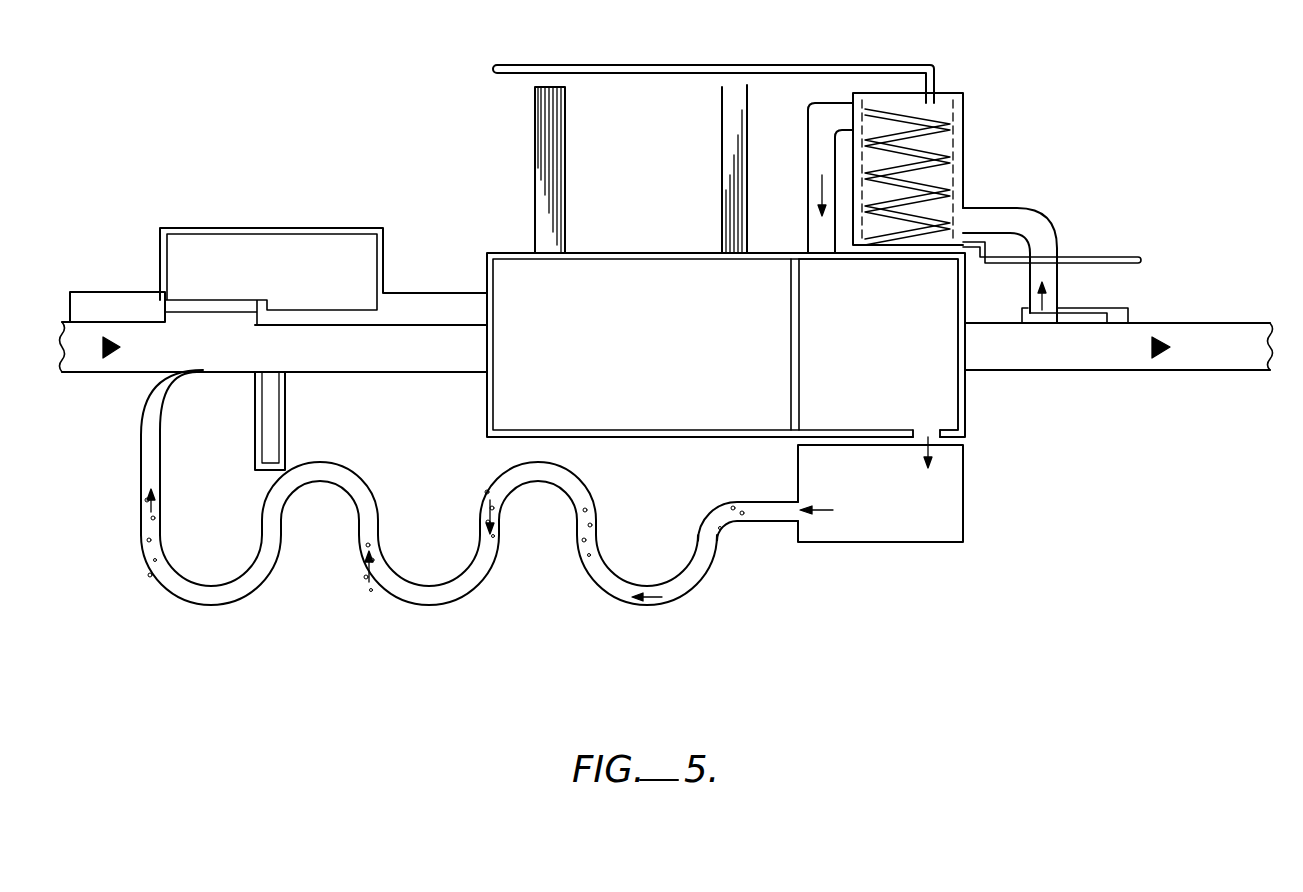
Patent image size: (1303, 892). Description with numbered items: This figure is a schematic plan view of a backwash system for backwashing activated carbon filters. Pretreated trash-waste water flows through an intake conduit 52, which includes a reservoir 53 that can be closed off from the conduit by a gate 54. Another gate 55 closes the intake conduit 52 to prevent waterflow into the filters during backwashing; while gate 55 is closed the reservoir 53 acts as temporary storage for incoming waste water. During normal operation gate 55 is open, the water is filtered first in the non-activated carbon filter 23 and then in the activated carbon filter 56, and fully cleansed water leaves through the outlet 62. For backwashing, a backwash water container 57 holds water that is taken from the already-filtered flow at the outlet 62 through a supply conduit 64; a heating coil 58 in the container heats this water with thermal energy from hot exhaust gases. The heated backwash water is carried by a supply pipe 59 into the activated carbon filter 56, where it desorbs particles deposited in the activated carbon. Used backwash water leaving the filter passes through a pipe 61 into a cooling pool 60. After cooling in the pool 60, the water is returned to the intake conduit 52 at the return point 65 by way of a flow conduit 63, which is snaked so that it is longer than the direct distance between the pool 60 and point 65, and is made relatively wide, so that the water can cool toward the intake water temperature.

The non-activated carbon filter 23 is at (670, 418).
The intake conduit 52 is at (82, 352).
The reservoir 53 is at (252, 250).
The gate 54 is at (118, 300).
The gate 55 is at (275, 417).
The activated carbon filter 56 is at (953, 408).
The backwash water container 57 is at (953, 177).
The heating coil 58 is at (945, 125).
The supply pipe 59 is at (813, 183).
The cooling pool 60 is at (951, 527).
The pipe 61 is at (943, 441).
The outlet 62 is at (1208, 357).
The flow conduit 63 is at (633, 598).
The supply conduit 64 is at (1038, 235).
The return point 65 is at (176, 378).